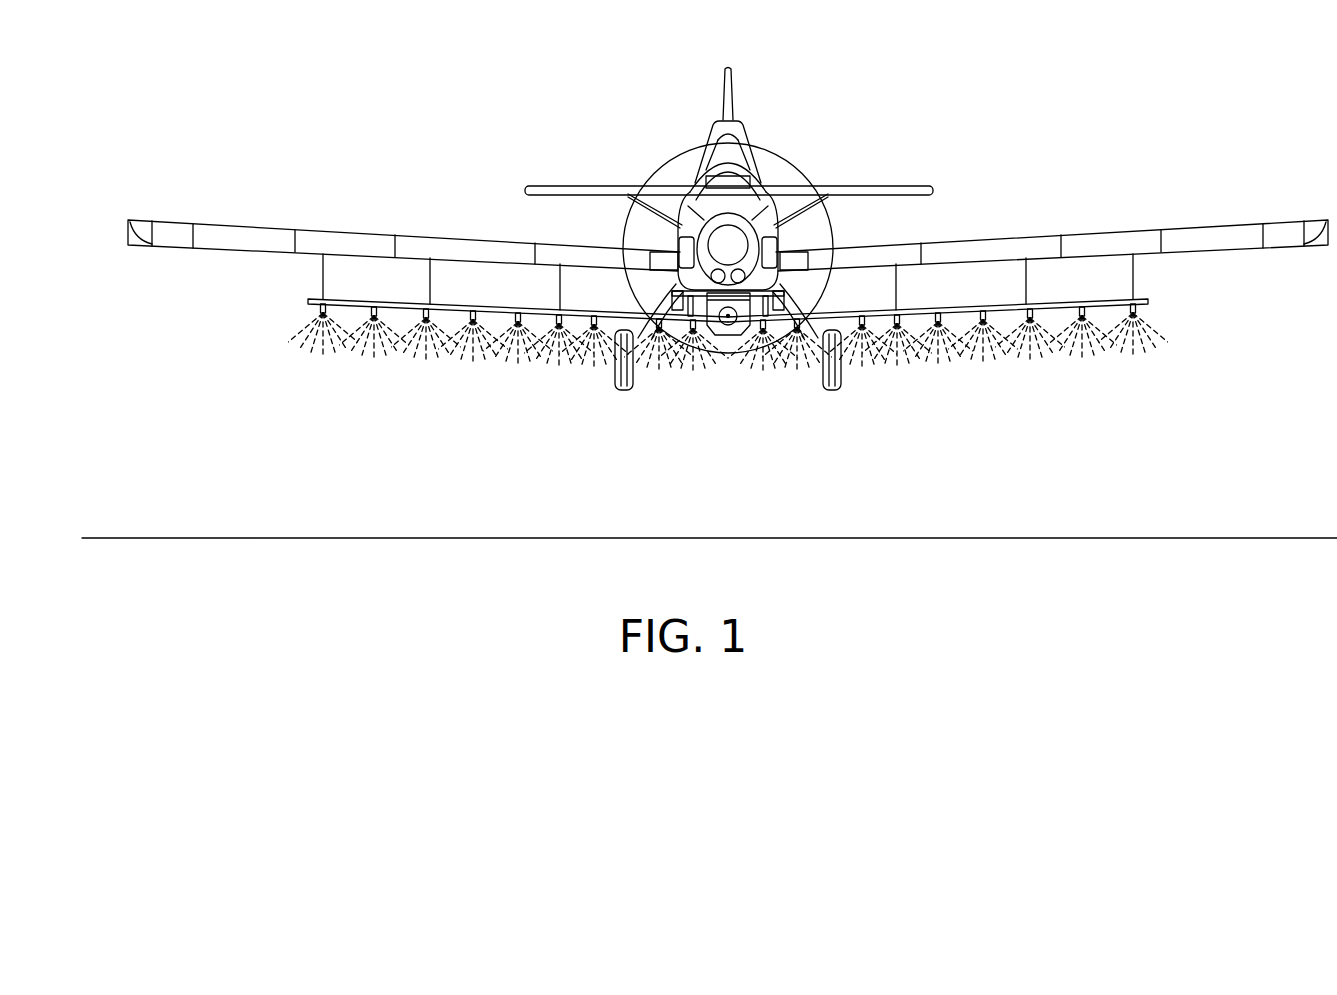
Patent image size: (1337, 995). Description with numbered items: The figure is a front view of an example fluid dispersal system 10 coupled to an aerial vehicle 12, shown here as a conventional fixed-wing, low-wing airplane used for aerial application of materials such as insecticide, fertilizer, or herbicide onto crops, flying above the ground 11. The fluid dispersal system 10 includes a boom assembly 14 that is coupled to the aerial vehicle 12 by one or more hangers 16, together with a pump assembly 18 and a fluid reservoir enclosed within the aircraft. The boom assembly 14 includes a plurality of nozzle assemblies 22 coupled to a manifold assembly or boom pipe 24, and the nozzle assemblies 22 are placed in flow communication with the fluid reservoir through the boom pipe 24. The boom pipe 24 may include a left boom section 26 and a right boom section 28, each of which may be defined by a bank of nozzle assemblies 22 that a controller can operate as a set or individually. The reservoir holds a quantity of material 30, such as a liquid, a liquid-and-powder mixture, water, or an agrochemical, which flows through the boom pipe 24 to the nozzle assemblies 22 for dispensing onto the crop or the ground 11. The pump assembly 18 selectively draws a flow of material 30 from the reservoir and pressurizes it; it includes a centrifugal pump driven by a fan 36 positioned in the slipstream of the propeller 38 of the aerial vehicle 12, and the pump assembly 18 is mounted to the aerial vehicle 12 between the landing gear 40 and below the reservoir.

The fluid dispersal system 10 is at (573, 392).
The ground 11 is at (1153, 538).
The aerial vehicle 12 is at (732, 82).
The boom assembly 14 is at (1150, 296).
The hangers 16 is at (323, 272).
The pump assembly 18 is at (740, 358).
The nozzle assemblies 22 is at (307, 305).
The boom pipe 24 is at (497, 303).
The left boom section 26 is at (967, 277).
The right boom section 28 is at (388, 277).
The material 30 is at (367, 350).
The fan 36 is at (707, 355).
The propeller 38 is at (785, 155).
The landing gear 40 is at (642, 358).